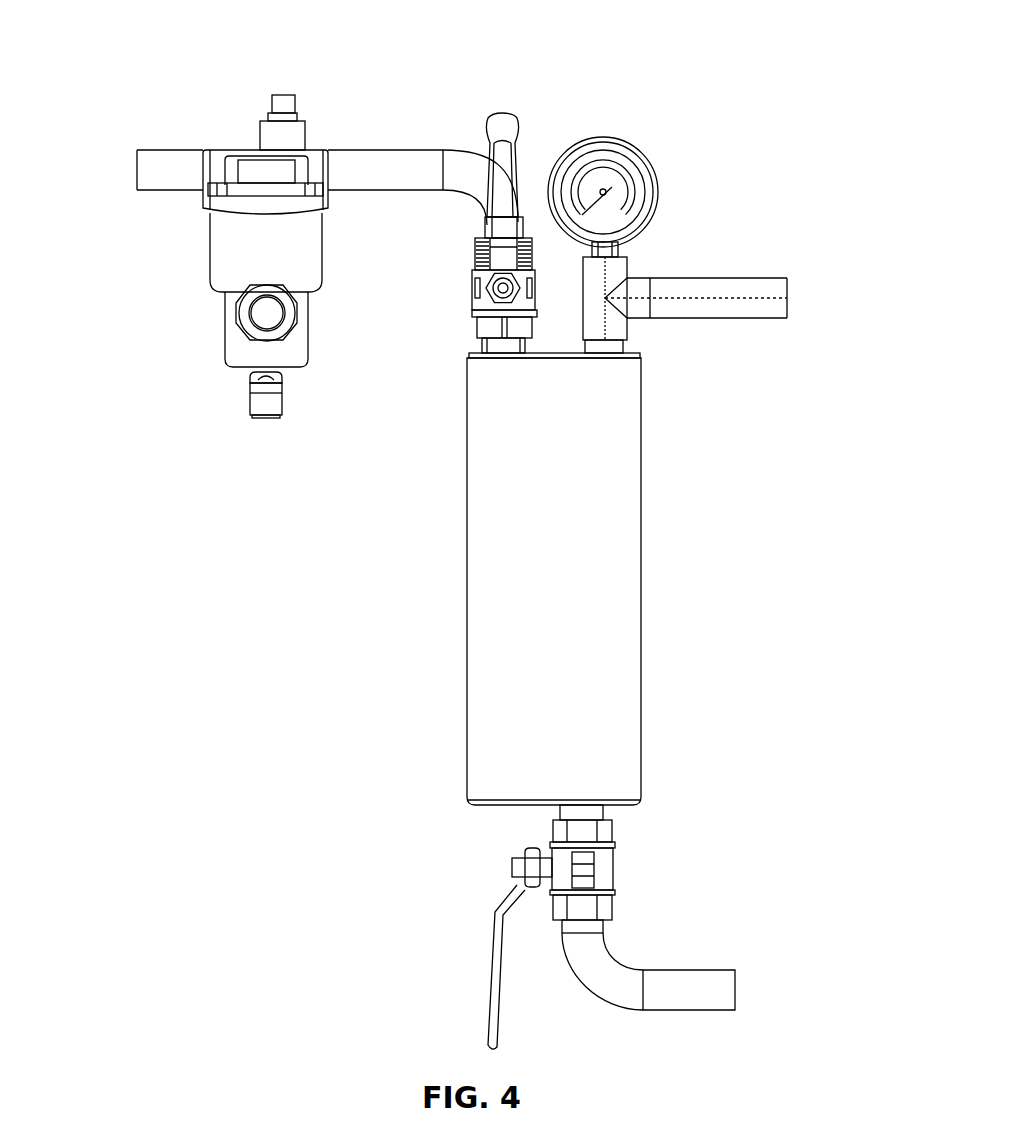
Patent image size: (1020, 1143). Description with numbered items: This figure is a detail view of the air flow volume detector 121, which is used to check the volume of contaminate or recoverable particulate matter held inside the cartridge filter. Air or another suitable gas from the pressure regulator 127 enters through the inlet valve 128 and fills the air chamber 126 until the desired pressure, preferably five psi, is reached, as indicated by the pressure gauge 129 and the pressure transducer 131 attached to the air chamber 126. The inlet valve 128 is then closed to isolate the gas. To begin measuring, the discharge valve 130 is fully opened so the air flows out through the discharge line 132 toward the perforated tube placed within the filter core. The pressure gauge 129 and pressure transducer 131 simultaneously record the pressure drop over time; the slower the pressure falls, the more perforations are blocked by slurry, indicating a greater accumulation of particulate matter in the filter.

The air flow volume detector 121 is at (428, 78).
The air chamber 126 is at (585, 540).
The pressure regulator 127 is at (270, 247).
The inlet valve 128 is at (525, 330).
The pressure gauge 129 is at (655, 177).
The discharge valve 130 is at (593, 859).
The pressure transducer 131 is at (723, 305).
The discharge line 132 is at (668, 988).